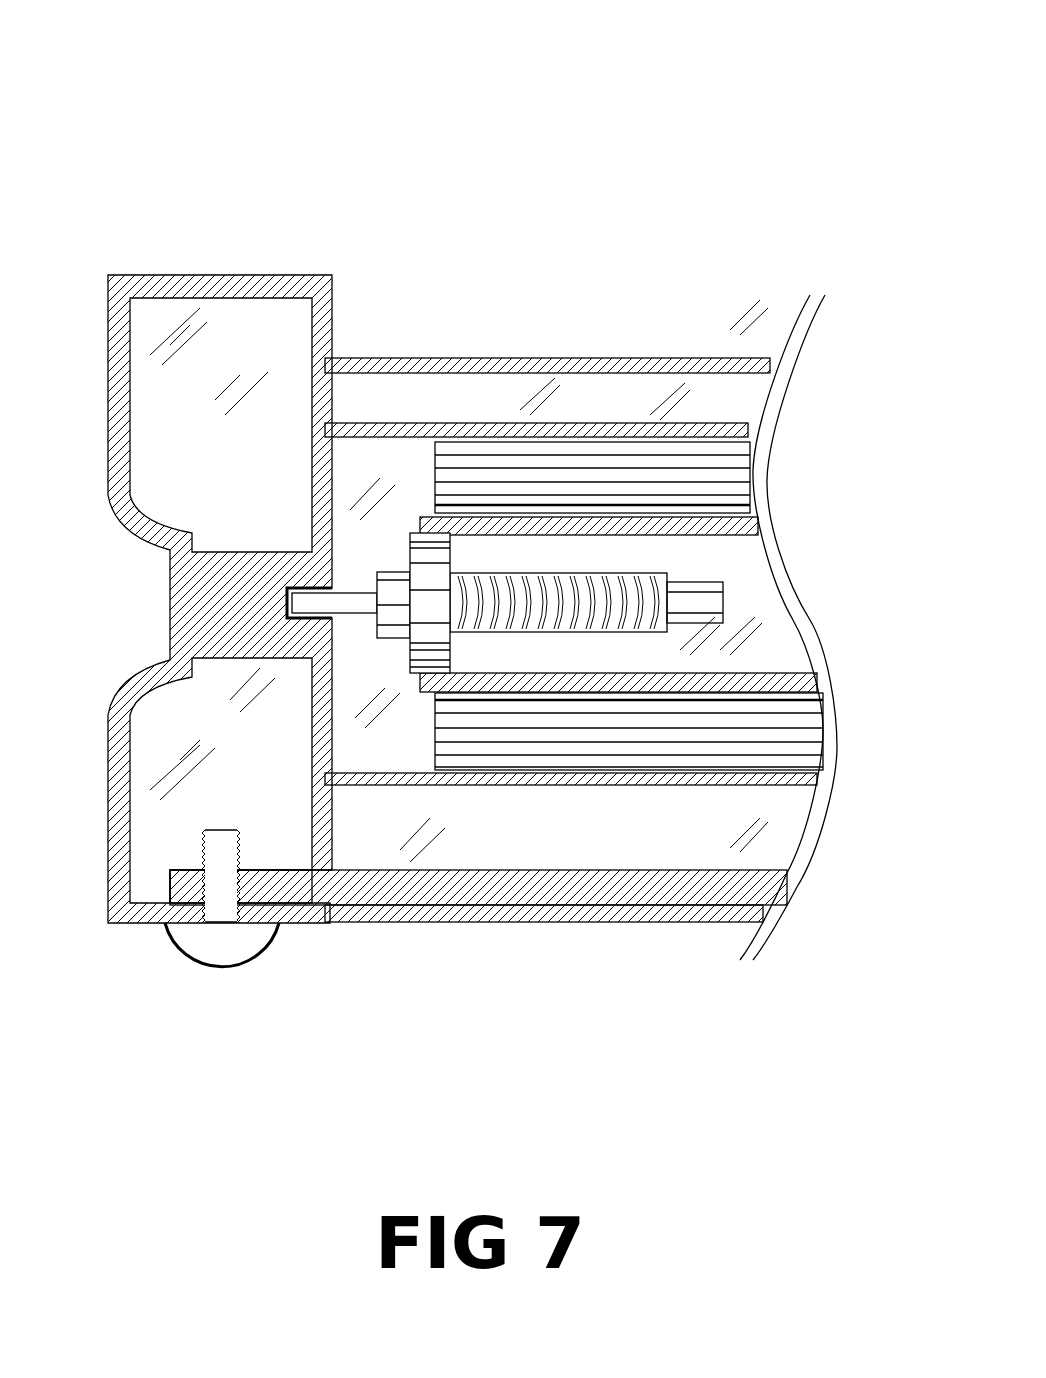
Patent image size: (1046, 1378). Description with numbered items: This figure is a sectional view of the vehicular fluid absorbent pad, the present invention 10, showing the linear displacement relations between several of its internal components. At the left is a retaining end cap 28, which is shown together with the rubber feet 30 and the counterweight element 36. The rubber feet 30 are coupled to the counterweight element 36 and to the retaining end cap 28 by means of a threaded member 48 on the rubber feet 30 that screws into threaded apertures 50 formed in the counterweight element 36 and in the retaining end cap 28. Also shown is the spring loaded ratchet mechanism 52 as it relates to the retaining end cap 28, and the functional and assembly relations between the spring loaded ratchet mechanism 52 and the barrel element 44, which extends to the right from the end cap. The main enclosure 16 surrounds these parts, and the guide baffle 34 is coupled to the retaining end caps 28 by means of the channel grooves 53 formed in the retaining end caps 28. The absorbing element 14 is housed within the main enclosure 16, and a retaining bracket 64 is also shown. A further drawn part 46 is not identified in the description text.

The present invention 10 is at (286, 246).
The absorbing element 14 is at (472, 722).
The main enclosure 16 is at (334, 490).
The retaining end cap 28 is at (333, 430).
The rubber feet 30 is at (193, 940).
The guide baffle 34 is at (605, 422).
The counterweight element 36 is at (600, 895).
The barrel element 44 is at (725, 542).
The motor hub 46 is at (428, 603).
The threaded member 48 is at (217, 847).
The threaded aperture 50 is at (240, 868).
The spring loaded ratchet mechanism 52 is at (333, 590).
The channel grooves 53 is at (335, 425).
The retaining bracket 64 is at (332, 652).